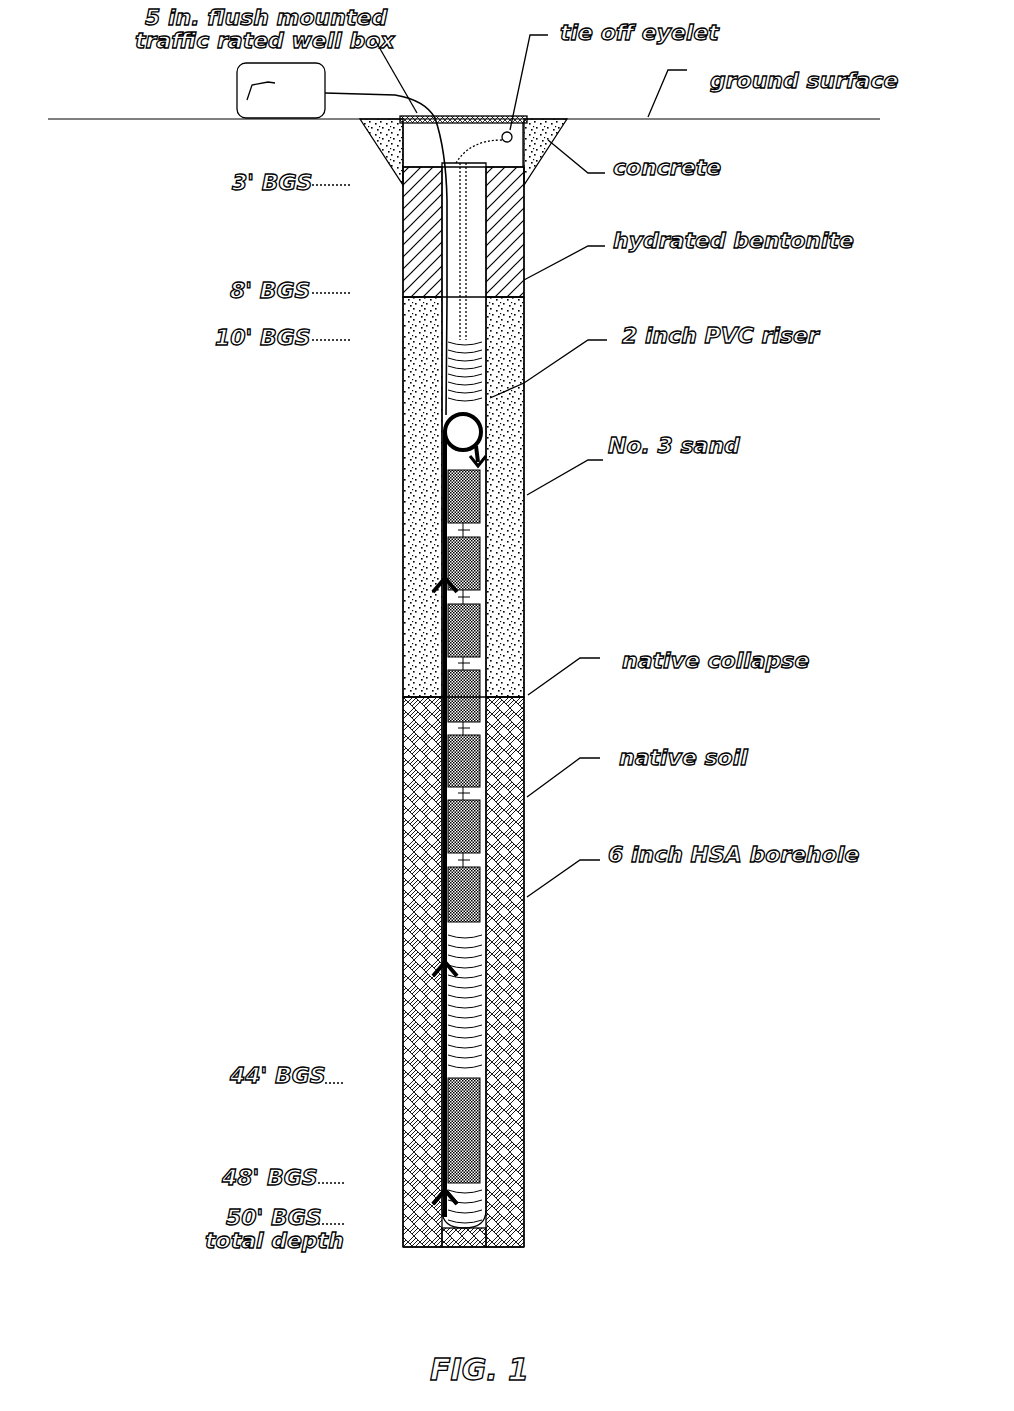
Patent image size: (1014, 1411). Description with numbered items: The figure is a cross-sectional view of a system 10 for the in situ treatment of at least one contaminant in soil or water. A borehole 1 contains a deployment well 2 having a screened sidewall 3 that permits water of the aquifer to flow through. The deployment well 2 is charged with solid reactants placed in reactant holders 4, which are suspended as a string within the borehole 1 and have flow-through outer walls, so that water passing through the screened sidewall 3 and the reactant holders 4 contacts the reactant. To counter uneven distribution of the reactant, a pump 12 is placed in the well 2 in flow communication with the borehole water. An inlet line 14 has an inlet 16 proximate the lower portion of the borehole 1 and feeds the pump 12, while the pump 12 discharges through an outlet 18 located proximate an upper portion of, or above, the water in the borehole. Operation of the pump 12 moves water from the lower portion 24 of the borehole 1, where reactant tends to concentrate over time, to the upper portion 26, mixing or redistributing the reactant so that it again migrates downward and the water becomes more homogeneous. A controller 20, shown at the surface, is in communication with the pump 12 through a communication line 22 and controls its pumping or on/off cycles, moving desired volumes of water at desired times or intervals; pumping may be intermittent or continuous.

The borehole 1 is at (403, 565).
The deployment well 2 is at (487, 225).
The screened sidewall 3 is at (484, 1007).
The reactant holders 4 is at (484, 597).
The system 10 is at (375, 622).
The pump 12 is at (441, 428).
The inlet line 14 is at (445, 1105).
The inlet 16 is at (452, 1215).
The outlet 18 is at (490, 455).
The controller 20 is at (237, 100).
The communication line 22 is at (427, 110).
The lower portion 24 is at (470, 1203).
The upper portion 26 is at (480, 530).